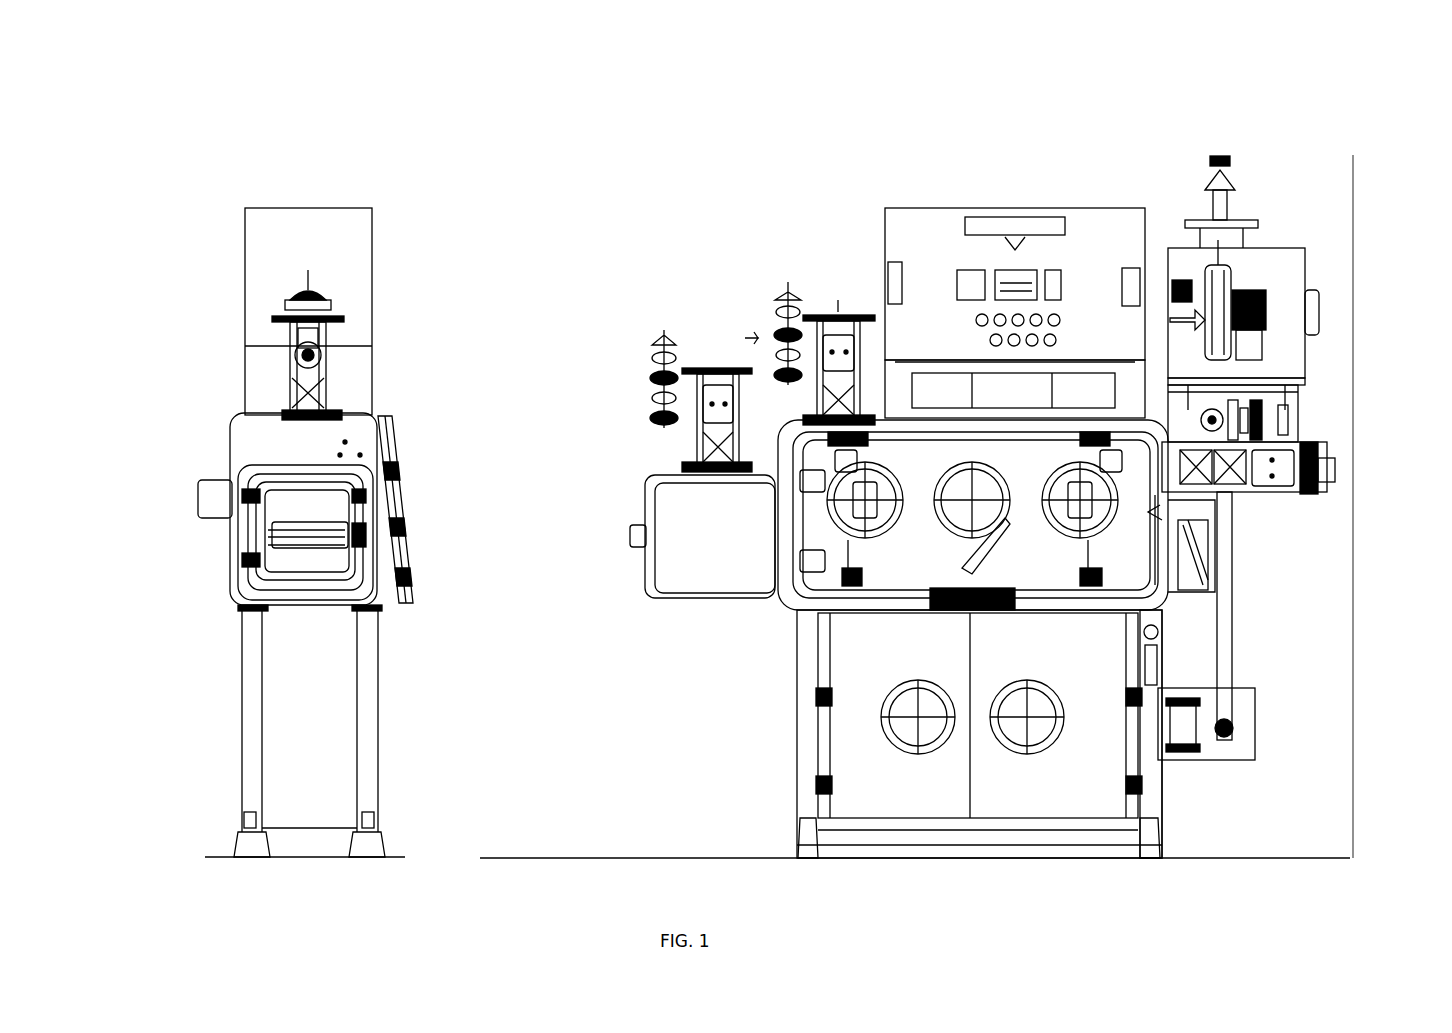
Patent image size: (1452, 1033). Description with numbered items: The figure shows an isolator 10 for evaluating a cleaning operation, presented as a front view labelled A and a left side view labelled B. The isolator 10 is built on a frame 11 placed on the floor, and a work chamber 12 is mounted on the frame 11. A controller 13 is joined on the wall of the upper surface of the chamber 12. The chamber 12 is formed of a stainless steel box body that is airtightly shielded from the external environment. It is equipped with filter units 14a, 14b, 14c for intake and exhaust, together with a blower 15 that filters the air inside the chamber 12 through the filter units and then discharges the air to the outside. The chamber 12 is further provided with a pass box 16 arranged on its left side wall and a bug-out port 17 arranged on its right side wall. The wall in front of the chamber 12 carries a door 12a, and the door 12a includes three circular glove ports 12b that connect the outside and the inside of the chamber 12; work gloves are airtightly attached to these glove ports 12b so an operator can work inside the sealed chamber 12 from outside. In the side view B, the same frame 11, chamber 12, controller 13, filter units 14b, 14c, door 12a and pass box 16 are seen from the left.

The isolator 10 is at (657, 140).
The frame 11 is at (795, 675).
The work chamber 12 is at (770, 572).
The door 12a is at (440, 553).
The glove ports 12b is at (1180, 505).
The controller 13 is at (356, 262).
The filter unit 14a is at (1325, 445).
The filter unit 14b is at (288, 362).
The filter unit 14c is at (283, 300).
The blower 15 is at (1228, 285).
The pass box 16 is at (256, 570).
The bug-out port 17 is at (1205, 543).